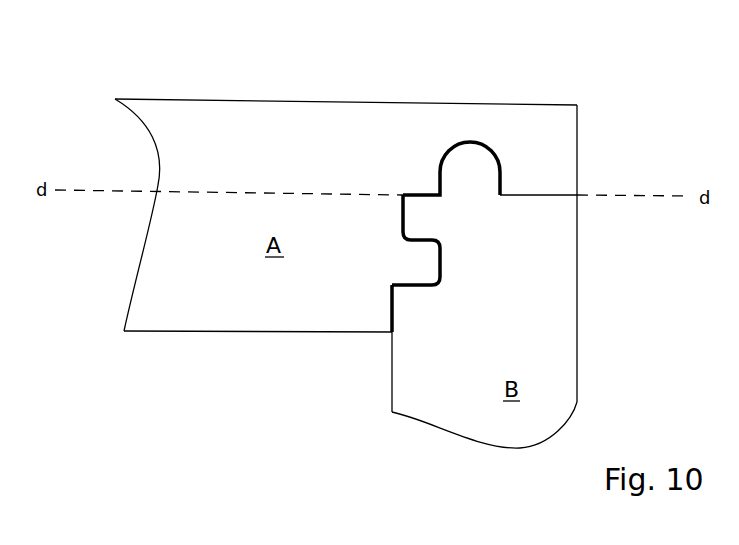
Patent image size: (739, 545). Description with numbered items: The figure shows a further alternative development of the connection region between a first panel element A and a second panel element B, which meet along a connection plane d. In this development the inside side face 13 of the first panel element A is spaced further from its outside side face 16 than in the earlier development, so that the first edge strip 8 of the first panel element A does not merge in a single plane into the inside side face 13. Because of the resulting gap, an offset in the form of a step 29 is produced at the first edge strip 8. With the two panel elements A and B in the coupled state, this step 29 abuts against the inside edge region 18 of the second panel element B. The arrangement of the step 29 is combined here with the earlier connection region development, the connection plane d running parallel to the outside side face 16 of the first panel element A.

The outside side face 16 is at (238, 99).
The inside side face 13 is at (181, 333).
The inside edge region 18 is at (391, 373).
The first edge strip 8 is at (425, 262).
The step 29 is at (395, 315).